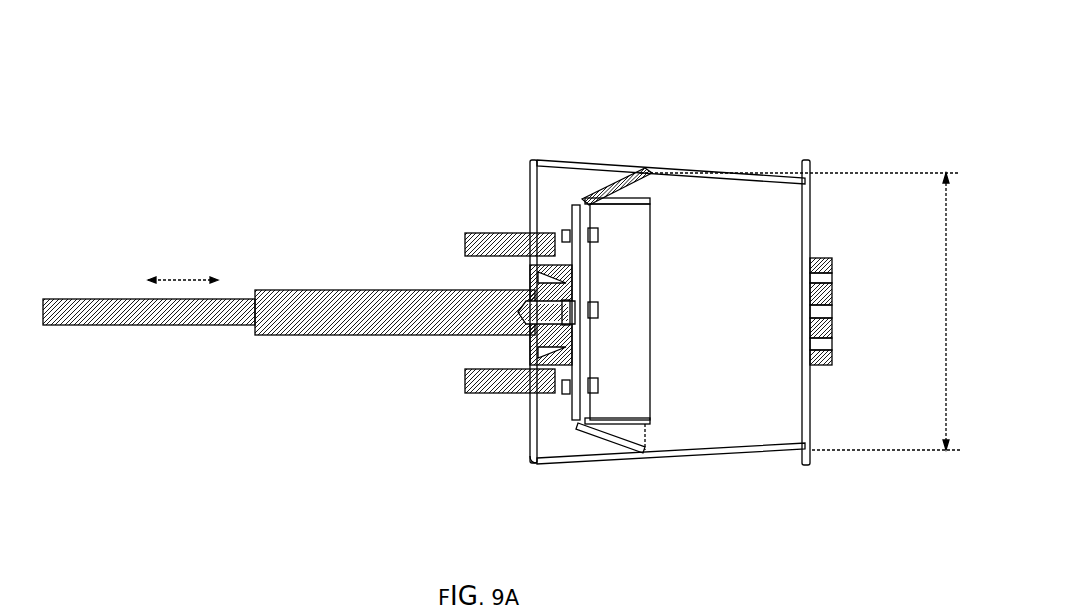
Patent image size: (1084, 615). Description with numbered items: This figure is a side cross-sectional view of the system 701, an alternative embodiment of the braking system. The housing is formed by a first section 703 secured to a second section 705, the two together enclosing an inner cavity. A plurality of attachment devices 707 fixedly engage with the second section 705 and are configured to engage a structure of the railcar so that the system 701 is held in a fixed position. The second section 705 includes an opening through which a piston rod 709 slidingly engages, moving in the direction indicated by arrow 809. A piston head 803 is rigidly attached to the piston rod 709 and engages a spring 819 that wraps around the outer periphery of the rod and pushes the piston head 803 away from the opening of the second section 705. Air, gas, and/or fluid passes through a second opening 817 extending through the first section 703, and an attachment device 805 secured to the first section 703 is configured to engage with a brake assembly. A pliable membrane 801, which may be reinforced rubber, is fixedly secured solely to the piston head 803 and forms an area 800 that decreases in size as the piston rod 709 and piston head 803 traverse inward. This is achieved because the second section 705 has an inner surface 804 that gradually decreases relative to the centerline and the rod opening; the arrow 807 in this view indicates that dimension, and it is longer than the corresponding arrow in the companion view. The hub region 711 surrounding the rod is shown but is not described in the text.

The system 701 is at (754, 86).
The first section 703 is at (808, 162).
The second section 705 is at (625, 165).
The attachment devices 707 is at (505, 232).
The piston rod 709 is at (235, 298).
The hub 711 is at (525, 338).
The area 800 is at (631, 167).
The pliable membrane 801 is at (610, 440).
The piston head 803 is at (558, 458).
The inner surface 804 is at (626, 192).
The attachment device 805 is at (832, 358).
The arrow 807 is at (945, 323).
The arrow 809 is at (183, 278).
The second opening 817 is at (834, 310).
The spring 819 is at (563, 230).